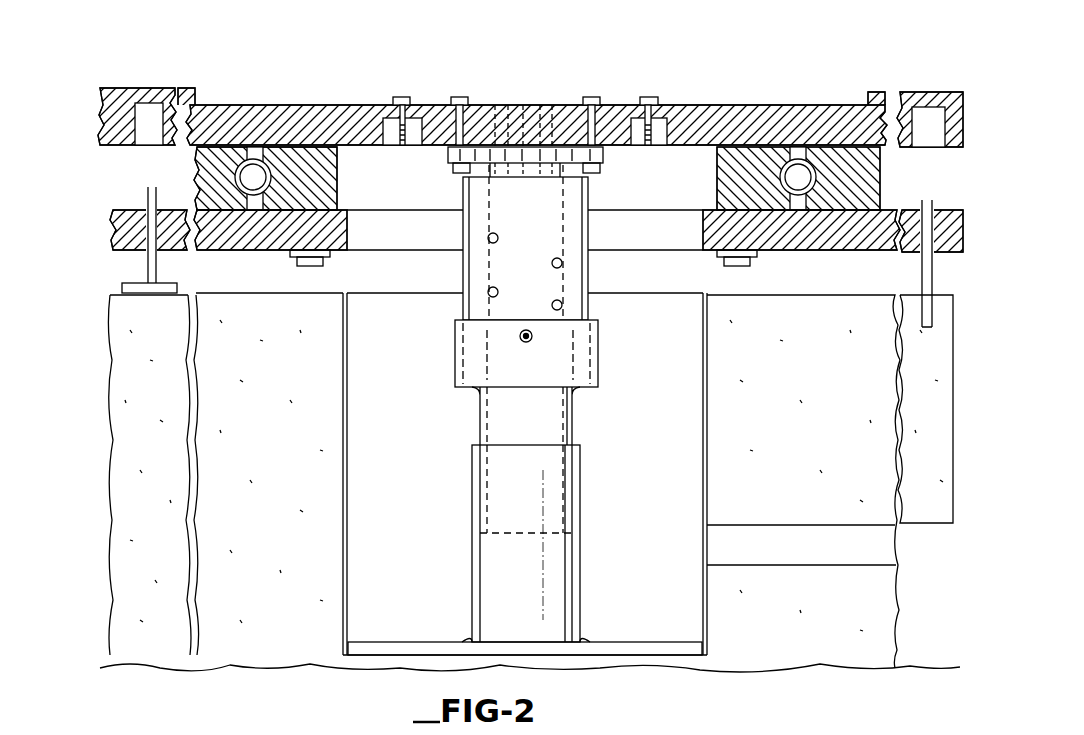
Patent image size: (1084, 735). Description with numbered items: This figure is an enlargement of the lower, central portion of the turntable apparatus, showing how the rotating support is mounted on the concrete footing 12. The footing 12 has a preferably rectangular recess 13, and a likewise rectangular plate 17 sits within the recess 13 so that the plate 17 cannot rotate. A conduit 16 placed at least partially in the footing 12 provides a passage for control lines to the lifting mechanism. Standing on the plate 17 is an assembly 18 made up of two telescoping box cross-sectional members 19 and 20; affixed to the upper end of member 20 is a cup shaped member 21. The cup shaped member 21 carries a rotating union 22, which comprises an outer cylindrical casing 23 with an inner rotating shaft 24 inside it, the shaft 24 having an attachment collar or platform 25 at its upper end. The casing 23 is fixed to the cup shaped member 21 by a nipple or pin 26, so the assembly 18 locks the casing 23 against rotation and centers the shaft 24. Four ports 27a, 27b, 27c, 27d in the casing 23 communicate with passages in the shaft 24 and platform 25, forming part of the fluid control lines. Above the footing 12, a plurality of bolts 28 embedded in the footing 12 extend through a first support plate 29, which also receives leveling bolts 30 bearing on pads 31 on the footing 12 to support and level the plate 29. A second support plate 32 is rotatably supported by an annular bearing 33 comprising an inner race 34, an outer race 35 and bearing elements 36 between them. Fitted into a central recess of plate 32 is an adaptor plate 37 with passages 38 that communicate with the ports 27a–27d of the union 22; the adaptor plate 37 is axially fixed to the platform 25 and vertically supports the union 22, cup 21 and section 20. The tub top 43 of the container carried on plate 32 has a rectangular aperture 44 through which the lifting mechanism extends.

The footing 12 is at (830, 498).
The recess 13 is at (700, 600).
The conduit 16 is at (805, 535).
The plate 17 is at (370, 645).
The assembly 18 is at (544, 481).
The telescoping box cross-sectional member 19 is at (580, 575).
The telescoping box cross-sectional member 20 is at (573, 425).
The cup shaped member 21 is at (535, 353).
The rotating union 22 is at (539, 253).
The outer cylindrical casing 23 is at (470, 305).
The inner rotating shaft 24 is at (558, 172).
The platform 25 is at (603, 156).
The pin 26 is at (520, 337).
The port 27a is at (497, 235).
The port 27b is at (497, 289).
The port 27c is at (561, 260).
The port 27d is at (561, 307).
The bolt 28 is at (922, 270).
The first support plate 29 is at (830, 250).
The leveling bolt 30 is at (170, 172).
The pad 31 is at (177, 285).
The second support plate 32 is at (883, 105).
The annular bearing 33 is at (811, 219).
The inner race 34 is at (717, 190).
The outer race 35 is at (880, 195).
The bearing element 36 is at (797, 190).
The adaptor plate 37 is at (613, 105).
The passage 38 is at (540, 105).
The tub top 43 is at (877, 98).
The rectangular aperture 44 is at (197, 88).